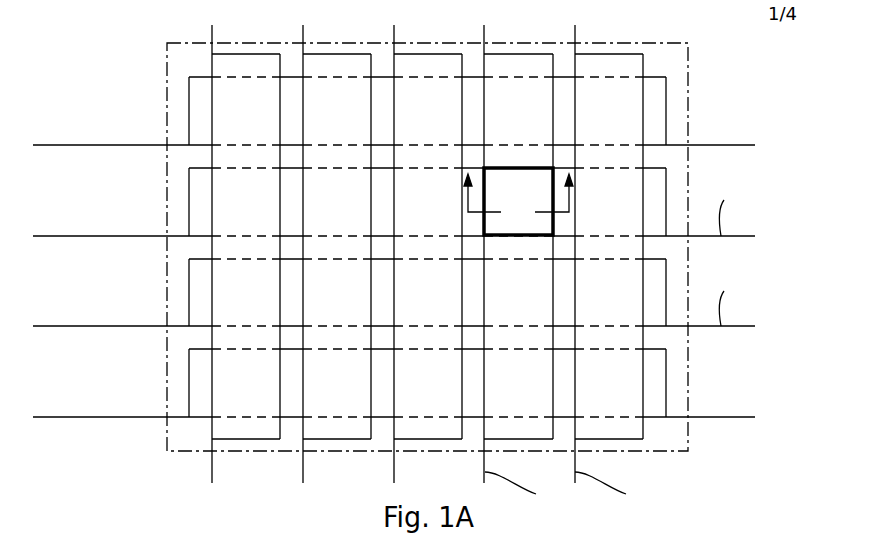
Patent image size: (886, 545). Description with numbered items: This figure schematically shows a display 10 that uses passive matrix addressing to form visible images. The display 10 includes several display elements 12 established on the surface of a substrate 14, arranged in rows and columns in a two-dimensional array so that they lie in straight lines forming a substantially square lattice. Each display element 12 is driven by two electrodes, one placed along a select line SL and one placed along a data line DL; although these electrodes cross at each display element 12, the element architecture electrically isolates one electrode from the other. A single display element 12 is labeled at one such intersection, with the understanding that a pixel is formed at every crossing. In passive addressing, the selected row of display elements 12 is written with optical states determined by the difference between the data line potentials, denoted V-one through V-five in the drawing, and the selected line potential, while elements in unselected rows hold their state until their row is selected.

The display 10 is at (706, 114).
The display element 12 is at (517, 166).
The substrate 14 is at (688, 82).